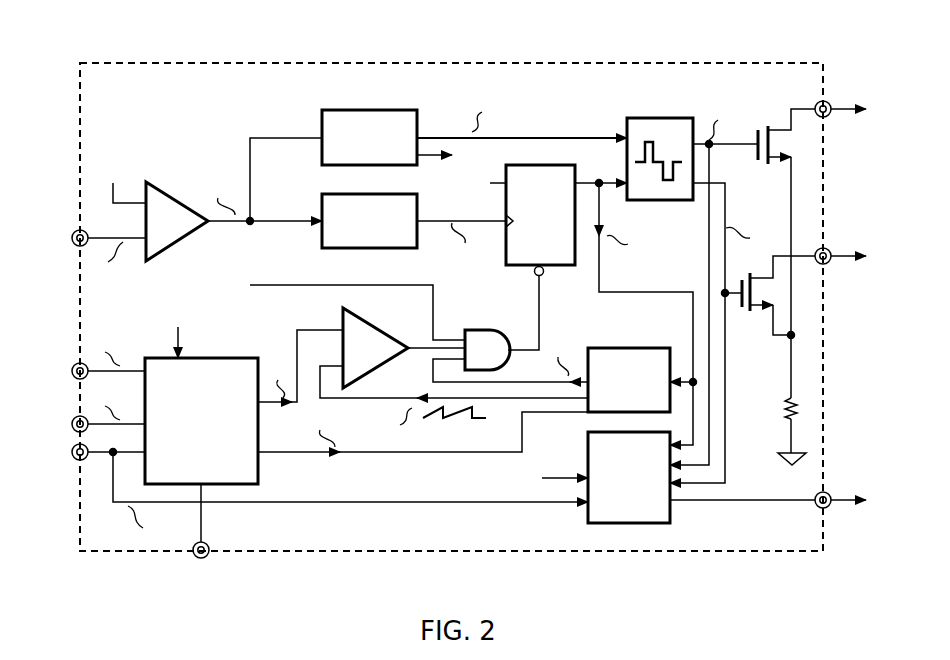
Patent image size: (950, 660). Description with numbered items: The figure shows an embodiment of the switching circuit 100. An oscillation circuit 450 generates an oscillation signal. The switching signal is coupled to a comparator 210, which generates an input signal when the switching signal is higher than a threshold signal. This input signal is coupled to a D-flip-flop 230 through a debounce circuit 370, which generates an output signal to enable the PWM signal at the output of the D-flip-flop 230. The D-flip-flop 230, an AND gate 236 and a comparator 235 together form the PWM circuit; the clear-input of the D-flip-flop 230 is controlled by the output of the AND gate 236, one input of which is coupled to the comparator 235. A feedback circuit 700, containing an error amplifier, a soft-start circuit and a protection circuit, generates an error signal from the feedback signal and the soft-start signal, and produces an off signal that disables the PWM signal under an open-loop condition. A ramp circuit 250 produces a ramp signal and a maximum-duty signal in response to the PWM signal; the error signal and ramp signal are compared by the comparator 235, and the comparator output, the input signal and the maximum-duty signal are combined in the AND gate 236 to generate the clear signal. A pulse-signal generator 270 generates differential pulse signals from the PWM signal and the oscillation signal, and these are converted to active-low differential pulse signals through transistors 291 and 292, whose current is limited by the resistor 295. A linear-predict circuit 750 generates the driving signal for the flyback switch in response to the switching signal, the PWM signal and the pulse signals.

The switching circuit 100 is at (756, 62).
The comparator 210 is at (180, 246).
The D-flip-flop 230 is at (558, 273).
The comparator 235 is at (385, 330).
The AND gate 236 is at (483, 330).
The ramp circuit 250 is at (642, 348).
The pulse-signal generator 270 is at (655, 118).
The transistor 291 is at (762, 165).
The transistor 292 is at (763, 312).
The resistor 295 is at (785, 410).
The debounce circuit 370 is at (318, 204).
The oscillation circuit 450 is at (318, 120).
The feedback circuit 700 is at (216, 357).
The linear-predict circuit 750 is at (585, 450).